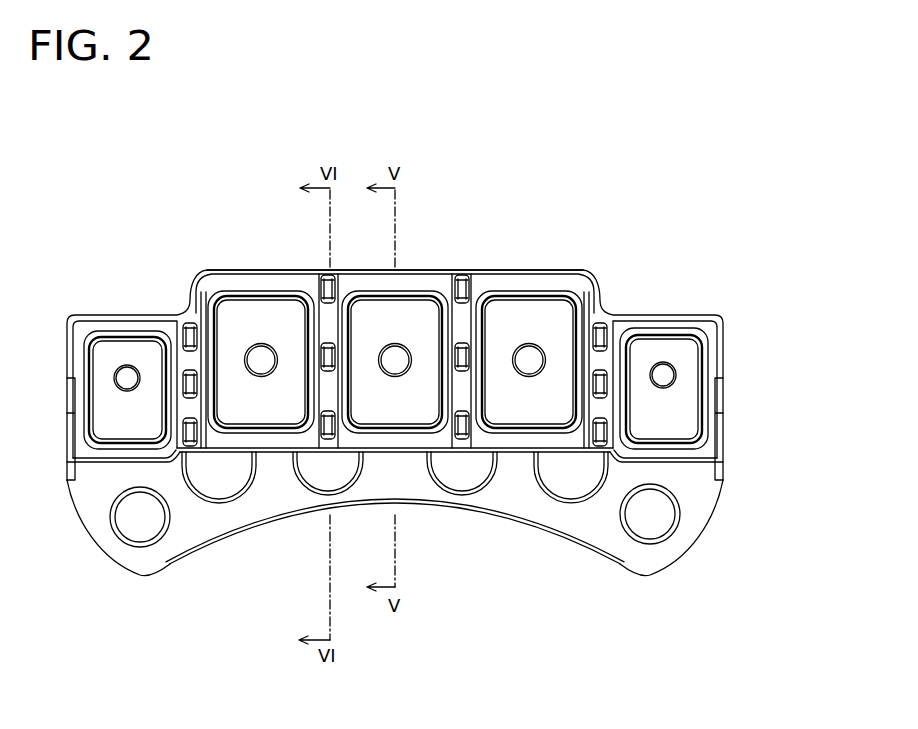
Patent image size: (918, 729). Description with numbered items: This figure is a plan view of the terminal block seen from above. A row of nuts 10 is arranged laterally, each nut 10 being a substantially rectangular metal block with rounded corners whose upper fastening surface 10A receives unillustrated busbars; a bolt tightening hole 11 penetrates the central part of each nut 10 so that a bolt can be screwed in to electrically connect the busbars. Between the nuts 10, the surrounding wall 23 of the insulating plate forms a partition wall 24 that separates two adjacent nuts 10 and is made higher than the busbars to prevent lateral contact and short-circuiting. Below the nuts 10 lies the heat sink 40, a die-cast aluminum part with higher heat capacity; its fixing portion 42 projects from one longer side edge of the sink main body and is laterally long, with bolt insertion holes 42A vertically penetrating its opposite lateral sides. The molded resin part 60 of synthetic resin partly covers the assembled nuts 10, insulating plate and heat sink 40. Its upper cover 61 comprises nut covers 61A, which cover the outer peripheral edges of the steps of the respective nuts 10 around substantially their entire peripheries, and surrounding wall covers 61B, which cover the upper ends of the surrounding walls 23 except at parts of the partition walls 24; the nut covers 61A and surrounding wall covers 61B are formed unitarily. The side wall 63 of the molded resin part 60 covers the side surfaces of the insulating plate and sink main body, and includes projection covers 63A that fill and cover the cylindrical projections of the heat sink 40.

The nut 10 is at (557, 282).
The upper fastening surface 10A is at (548, 400).
The bolt tightening hole 11 is at (248, 354).
The surrounding wall 23 is at (395, 322).
The partition wall 24 is at (461, 278).
The heat sink 40 is at (410, 559).
The fixing portion 42 is at (410, 573).
The bolt insertion hole 42A is at (144, 527).
The molded resin part 60 is at (734, 346).
The upper cover 61 is at (444, 405).
The nut cover 61A is at (258, 294).
The surrounding wall cover 61B is at (268, 440).
The side wall 63 is at (527, 260).
The projection cover 63A is at (457, 480).